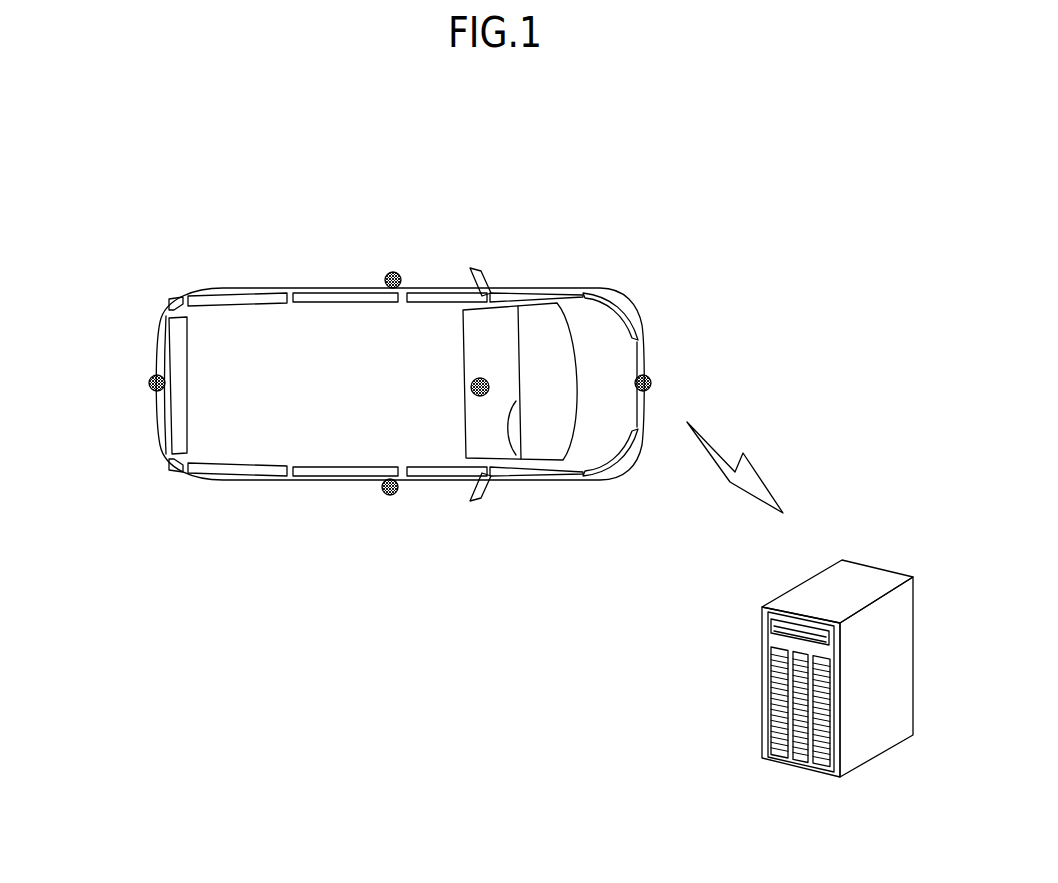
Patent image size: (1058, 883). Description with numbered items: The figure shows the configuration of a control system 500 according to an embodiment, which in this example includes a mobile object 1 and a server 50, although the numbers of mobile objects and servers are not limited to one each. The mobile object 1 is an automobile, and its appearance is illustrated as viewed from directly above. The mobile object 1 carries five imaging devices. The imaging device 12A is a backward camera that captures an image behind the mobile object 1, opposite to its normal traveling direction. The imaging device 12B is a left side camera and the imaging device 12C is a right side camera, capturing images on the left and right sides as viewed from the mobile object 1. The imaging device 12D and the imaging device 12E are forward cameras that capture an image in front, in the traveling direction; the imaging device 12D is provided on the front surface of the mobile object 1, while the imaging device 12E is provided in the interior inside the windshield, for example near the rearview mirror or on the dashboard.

The control system 500 is at (792, 171).
The mobile object 1 is at (562, 290).
The imaging device 12A is at (148, 381).
The imaging device 12B is at (393, 270).
The imaging device 12C is at (391, 497).
The imaging device 12D is at (653, 383).
The imaging device 12E is at (486, 383).
The server 50 is at (877, 571).